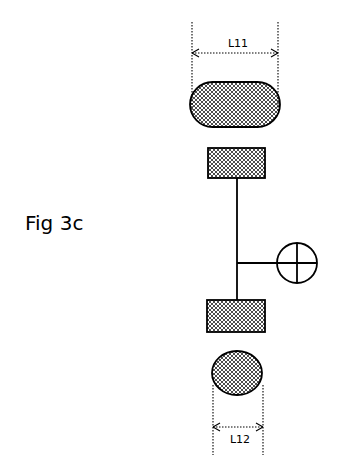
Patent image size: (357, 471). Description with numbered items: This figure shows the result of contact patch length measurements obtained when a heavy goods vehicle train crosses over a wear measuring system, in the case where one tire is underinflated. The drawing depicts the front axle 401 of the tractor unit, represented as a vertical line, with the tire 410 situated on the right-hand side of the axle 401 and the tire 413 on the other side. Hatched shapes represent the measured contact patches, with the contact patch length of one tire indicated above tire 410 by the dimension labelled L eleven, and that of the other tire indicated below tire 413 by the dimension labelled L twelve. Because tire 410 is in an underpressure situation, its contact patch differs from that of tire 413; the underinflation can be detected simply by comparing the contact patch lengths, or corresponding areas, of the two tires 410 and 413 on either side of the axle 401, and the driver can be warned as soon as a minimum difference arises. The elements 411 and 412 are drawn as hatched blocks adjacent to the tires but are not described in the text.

The front axle 401 is at (237, 216).
The tire 410 is at (208, 166).
The first rounded element 411 is at (190, 97).
The second block element 412 is at (207, 320).
The tire 413 is at (213, 372).